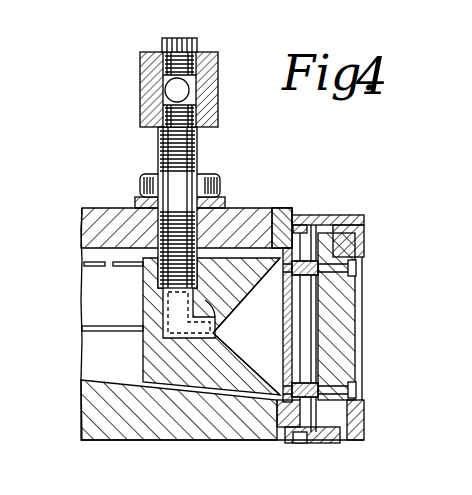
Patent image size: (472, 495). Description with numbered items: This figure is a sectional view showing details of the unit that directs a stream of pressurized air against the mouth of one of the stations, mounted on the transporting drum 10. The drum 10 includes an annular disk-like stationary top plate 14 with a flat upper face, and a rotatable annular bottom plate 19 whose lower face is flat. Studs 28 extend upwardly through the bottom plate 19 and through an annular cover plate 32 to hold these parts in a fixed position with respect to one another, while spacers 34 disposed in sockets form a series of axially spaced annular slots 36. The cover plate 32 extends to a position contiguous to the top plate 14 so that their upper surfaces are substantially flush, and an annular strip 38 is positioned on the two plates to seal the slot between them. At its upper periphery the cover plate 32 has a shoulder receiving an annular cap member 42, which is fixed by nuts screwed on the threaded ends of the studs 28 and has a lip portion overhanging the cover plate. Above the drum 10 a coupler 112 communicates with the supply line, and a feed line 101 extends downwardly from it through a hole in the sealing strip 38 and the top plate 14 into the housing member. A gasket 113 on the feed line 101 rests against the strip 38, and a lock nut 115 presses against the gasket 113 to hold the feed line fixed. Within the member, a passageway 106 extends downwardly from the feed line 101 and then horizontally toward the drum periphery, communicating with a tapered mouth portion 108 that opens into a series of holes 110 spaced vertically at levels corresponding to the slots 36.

The drum 10 is at (205, 452).
The stationary top plate 14 is at (98, 228).
The bottom plate 19 is at (100, 403).
The studs 28 is at (300, 444).
The annular cover plate 32 is at (335, 214).
The spacers 34 is at (286, 316).
The annular slots 36 is at (100, 327).
The annular strip 38 is at (268, 213).
The annular cap member 42 is at (366, 220).
The feed line 101 is at (186, 175).
The passageway 106 is at (160, 328).
The mouth portion 108 is at (230, 356).
The holes 110 is at (237, 312).
The coupler 112 is at (213, 90).
The gasket 113 is at (222, 203).
The lock nut 115 is at (153, 196).